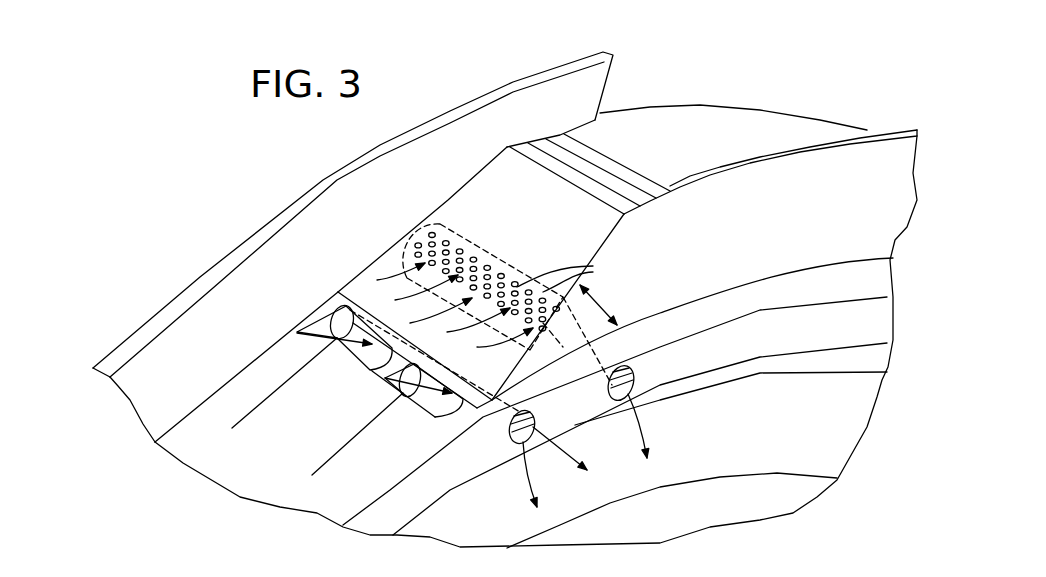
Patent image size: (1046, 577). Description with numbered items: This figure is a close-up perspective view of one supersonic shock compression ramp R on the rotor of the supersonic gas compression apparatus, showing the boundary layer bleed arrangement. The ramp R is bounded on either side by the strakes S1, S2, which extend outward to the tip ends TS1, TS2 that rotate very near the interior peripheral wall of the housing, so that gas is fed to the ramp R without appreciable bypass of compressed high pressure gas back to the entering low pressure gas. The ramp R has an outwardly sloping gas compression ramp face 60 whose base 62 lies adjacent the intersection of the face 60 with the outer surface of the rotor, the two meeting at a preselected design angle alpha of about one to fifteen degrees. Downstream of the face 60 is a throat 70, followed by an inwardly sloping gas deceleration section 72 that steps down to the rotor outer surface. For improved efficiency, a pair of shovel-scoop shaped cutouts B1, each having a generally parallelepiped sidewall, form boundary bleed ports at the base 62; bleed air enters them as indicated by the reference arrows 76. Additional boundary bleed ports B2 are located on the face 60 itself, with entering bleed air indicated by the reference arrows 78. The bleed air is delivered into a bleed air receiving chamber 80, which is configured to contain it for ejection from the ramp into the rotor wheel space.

The gas compression ramp face 60 is at (545, 245).
The base 62 is at (383, 376).
The throat 70 is at (558, 177).
The gas deceleration section 72 is at (598, 170).
The reference arrows 76 is at (250, 412).
The reference arrows 78 is at (392, 275).
The bleed air receiving chamber 80 is at (509, 434).
The supersonic shock compression ramp R is at (448, 200).
The strake S1 is at (832, 183).
The strake S2 is at (275, 267).
The tip end TS1 is at (812, 138).
The tip end TS2 is at (518, 82).
The shovel-scoop shaped cutouts B1 is at (438, 415).
The boundary bleed ports B2 is at (600, 270).